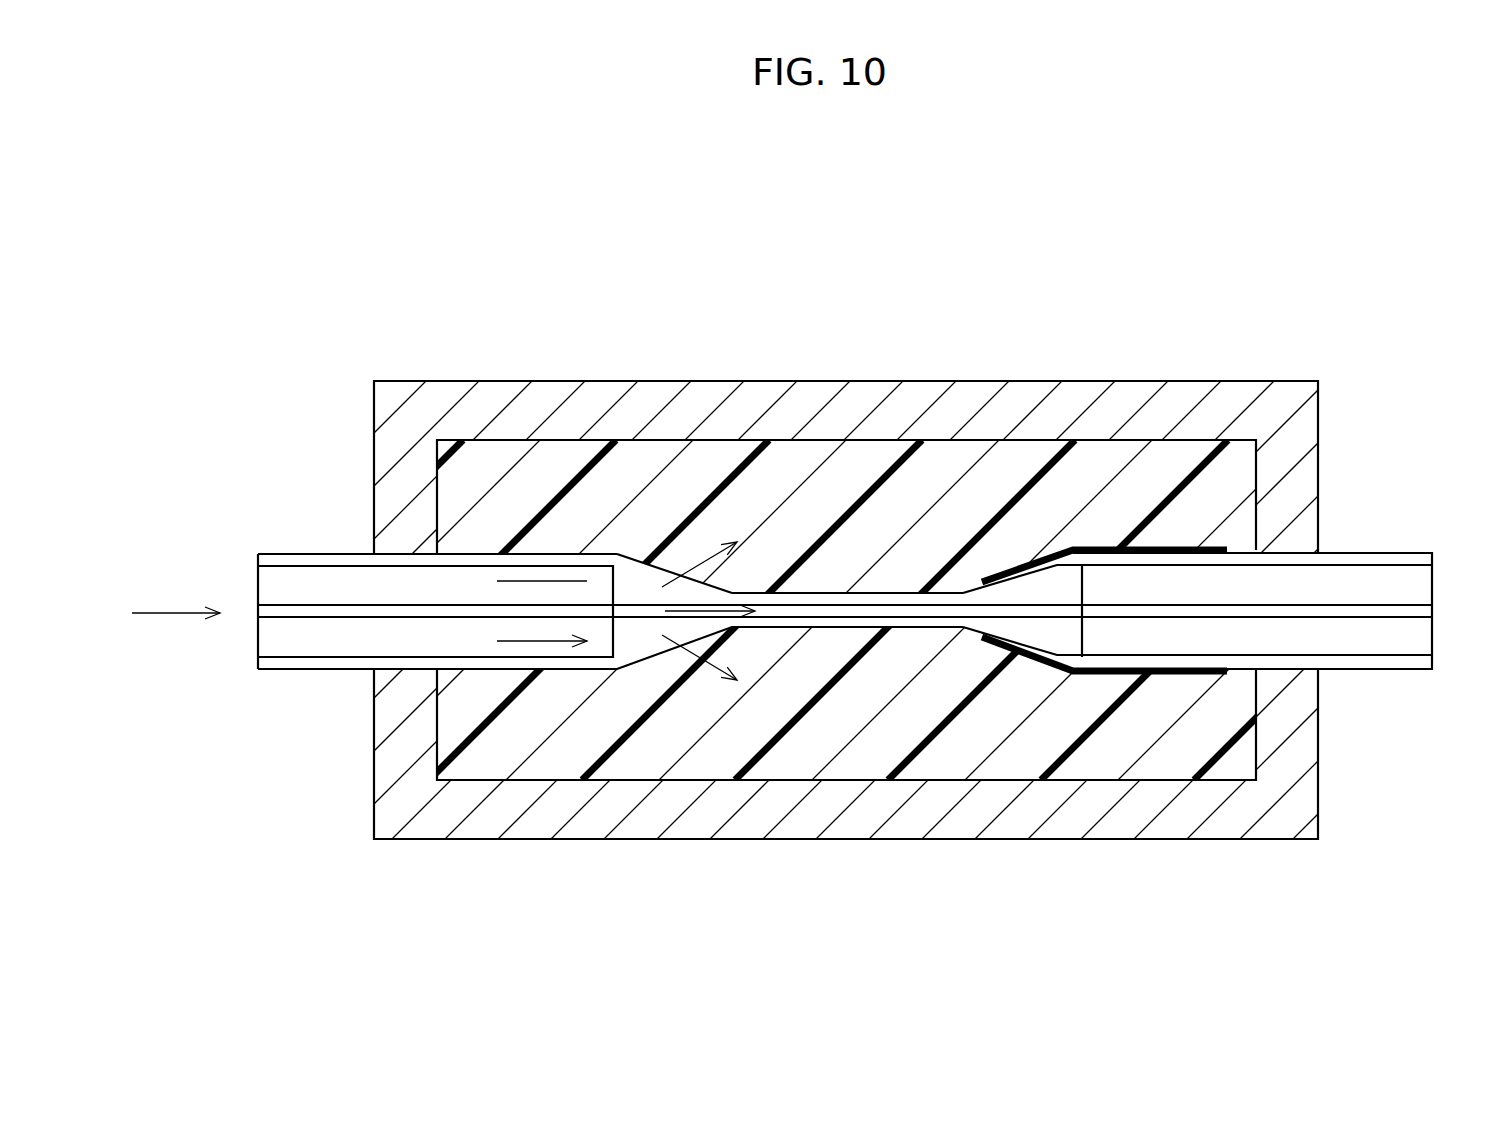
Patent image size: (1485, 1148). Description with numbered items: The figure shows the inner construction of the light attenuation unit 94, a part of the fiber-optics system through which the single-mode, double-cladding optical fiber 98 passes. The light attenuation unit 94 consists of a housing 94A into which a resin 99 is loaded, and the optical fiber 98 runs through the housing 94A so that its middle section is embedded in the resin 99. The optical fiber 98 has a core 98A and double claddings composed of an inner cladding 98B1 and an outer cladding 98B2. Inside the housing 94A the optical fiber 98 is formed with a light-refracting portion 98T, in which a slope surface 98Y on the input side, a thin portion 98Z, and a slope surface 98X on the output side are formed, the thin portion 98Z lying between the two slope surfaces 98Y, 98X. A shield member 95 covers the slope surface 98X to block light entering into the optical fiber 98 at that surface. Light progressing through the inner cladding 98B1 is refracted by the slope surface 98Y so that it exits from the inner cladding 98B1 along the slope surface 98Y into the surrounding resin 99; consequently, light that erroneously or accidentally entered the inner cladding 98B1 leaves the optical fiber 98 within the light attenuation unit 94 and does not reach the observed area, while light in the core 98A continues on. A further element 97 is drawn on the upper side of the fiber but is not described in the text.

The light attenuation unit 94 is at (1117, 337).
The housing 94A is at (1258, 381).
The resin 99 is at (932, 488).
The upper bonding layer 97 is at (1170, 546).
The shield member 95 is at (1167, 675).
The optical fiber 98 is at (258, 710).
The core 98A is at (267, 612).
The inner cladding 98B1 is at (317, 637).
The outer cladding 98B2 is at (257, 665).
The slope surface 98Y is at (673, 635).
The thin portion 98Z is at (868, 592).
The slope surface 98X is at (970, 632).
The light-refracting portion 98T is at (842, 712).